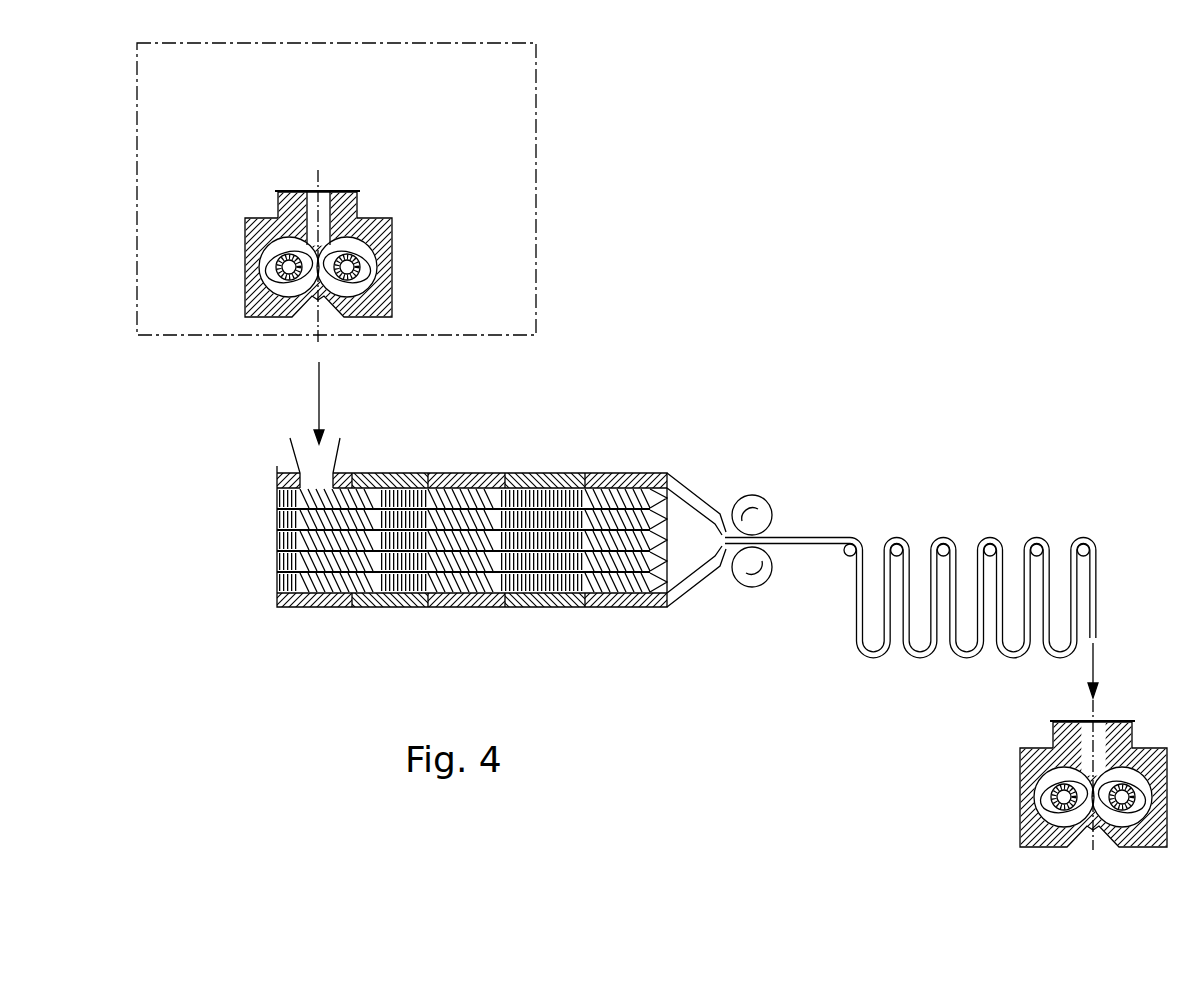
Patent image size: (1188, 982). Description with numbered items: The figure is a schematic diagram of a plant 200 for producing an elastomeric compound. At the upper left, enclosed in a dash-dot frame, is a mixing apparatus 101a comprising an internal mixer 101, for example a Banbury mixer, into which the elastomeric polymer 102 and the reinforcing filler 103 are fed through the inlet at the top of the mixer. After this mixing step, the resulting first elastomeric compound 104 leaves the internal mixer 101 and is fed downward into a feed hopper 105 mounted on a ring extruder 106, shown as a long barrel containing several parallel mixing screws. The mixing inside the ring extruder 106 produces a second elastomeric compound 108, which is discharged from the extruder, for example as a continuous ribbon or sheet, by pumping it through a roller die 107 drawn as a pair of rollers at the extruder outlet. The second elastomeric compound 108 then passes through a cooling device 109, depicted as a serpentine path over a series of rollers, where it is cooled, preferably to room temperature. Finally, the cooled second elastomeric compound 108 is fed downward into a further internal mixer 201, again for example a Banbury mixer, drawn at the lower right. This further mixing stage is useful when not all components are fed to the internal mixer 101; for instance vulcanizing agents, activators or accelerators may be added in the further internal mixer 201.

The internal mixer 101 is at (393, 237).
The mixing apparatus 101a is at (480, 125).
The elastomeric polymer 102 is at (310, 197).
The reinforcing filler 103 is at (326, 197).
The first elastomeric compound 104 is at (317, 385).
The feed hopper 105 is at (320, 460).
The ring extruder 106 is at (532, 477).
The roller die 107 is at (752, 508).
The second elastomeric compound 108 is at (831, 535).
The cooling device 109 is at (992, 548).
The plant 200 is at (800, 220).
The further internal mixer 201 is at (1028, 758).